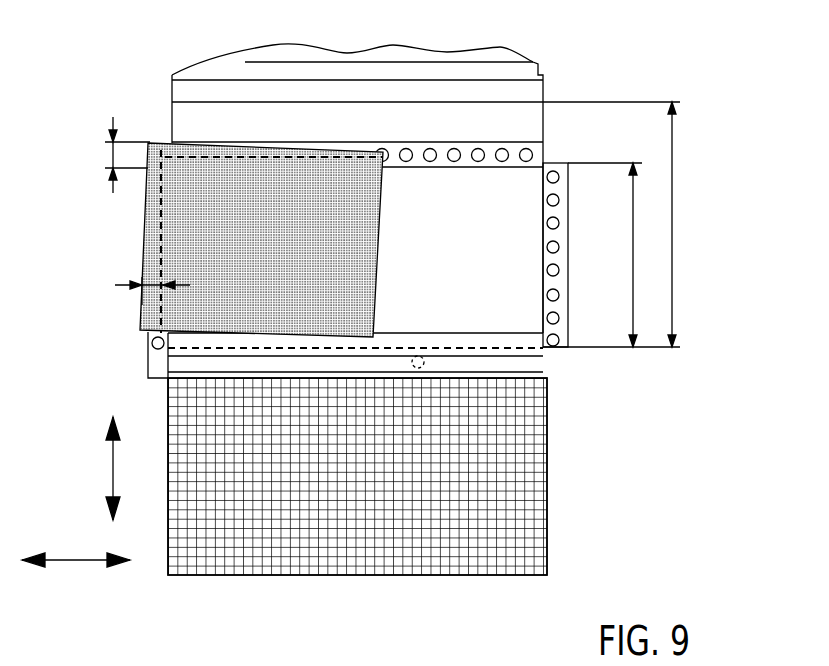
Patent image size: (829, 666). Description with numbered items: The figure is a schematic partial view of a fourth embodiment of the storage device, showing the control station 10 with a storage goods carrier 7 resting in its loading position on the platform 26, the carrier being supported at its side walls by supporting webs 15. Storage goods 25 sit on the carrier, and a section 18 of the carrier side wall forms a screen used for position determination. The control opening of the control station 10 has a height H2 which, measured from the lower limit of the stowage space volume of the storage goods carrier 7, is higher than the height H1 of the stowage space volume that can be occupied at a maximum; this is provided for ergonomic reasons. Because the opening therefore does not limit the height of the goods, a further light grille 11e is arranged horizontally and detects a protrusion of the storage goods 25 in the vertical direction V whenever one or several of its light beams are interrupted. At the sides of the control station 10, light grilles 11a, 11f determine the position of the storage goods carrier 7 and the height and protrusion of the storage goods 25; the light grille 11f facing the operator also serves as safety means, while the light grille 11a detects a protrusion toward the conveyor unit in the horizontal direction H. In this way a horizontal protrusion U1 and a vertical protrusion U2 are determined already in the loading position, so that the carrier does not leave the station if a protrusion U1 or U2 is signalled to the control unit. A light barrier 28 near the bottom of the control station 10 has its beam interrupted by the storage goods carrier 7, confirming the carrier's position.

The control station 10 is at (735, 205).
The light grille 11e is at (532, 150).
The light grille 11f is at (561, 270).
The light grille 11a is at (195, 372).
The supporting web 15 is at (152, 342).
The storage goods carrier 7 is at (535, 362).
The section of the side wall 18 is at (388, 358).
The light barrier 28 is at (415, 346).
The storage goods 25 is at (276, 259).
The platform 26 is at (537, 490).
The height of the stowage space volume H1 is at (617, 255).
The height of the control opening H2 is at (625, 224).
The horizontal protrusion U1 is at (143, 274).
The vertical protrusion U2 is at (113, 155).
The vertical direction V is at (106, 468).
The horizontal direction H is at (76, 549).